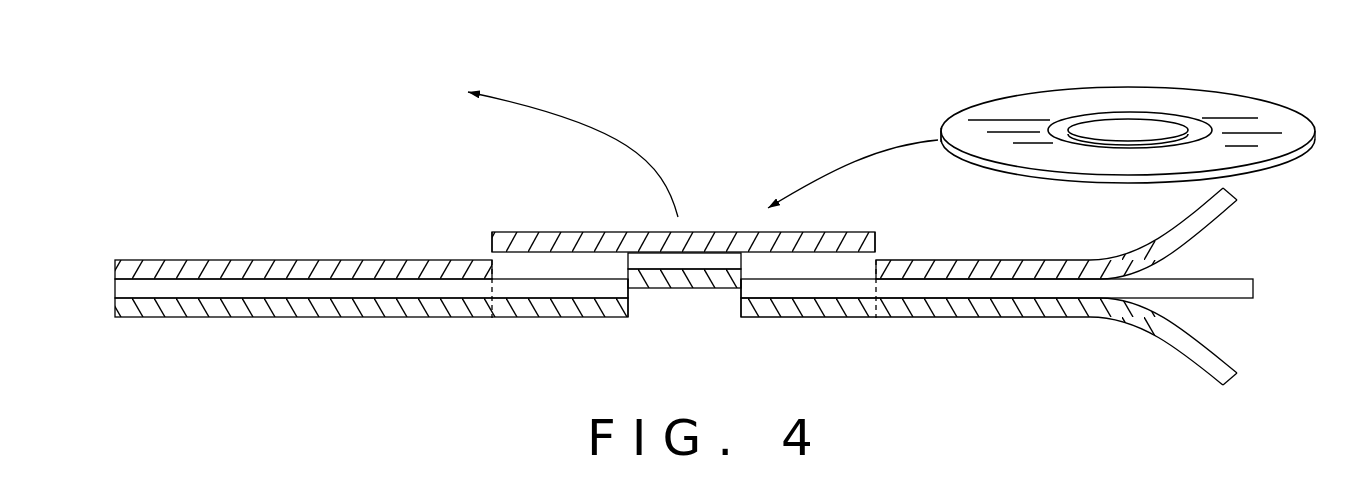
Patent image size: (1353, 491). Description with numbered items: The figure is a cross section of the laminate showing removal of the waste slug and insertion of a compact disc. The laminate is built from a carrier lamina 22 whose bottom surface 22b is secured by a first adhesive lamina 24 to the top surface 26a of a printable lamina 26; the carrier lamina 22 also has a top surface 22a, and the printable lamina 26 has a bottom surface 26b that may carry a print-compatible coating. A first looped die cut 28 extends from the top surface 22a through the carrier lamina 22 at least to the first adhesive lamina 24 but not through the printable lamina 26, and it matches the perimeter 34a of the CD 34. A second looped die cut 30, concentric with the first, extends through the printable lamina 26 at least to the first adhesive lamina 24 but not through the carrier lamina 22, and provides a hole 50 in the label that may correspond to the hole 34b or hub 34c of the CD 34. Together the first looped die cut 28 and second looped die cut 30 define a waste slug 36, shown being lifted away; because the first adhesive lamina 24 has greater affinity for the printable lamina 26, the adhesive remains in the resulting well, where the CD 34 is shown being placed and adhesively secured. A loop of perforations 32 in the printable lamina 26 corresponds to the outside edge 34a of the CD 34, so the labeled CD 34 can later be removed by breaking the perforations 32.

The carrier lamina 22 is at (728, 232).
The top surface of the carrier lamina 22a is at (1199, 210).
The bottom surface of the carrier lamina 22b is at (1236, 220).
The first adhesive lamina 24 is at (1240, 287).
The printable lamina 26 is at (729, 365).
The top surface of the printable lamina 26a is at (1239, 350).
The bottom surface of the printable lamina 26b is at (1196, 362).
The first looped die cut 28 is at (494, 229).
The second looped die cut 30 is at (628, 321).
The loop of perforations 32 is at (494, 321).
The CD 34 is at (1109, 102).
The perimeter of the CD 34a is at (936, 126).
The hole in the CD 34b is at (1133, 134).
The hub of the CD 34c is at (1072, 117).
The waste slug 36 is at (688, 201).
The hole in the label 50 is at (687, 303).